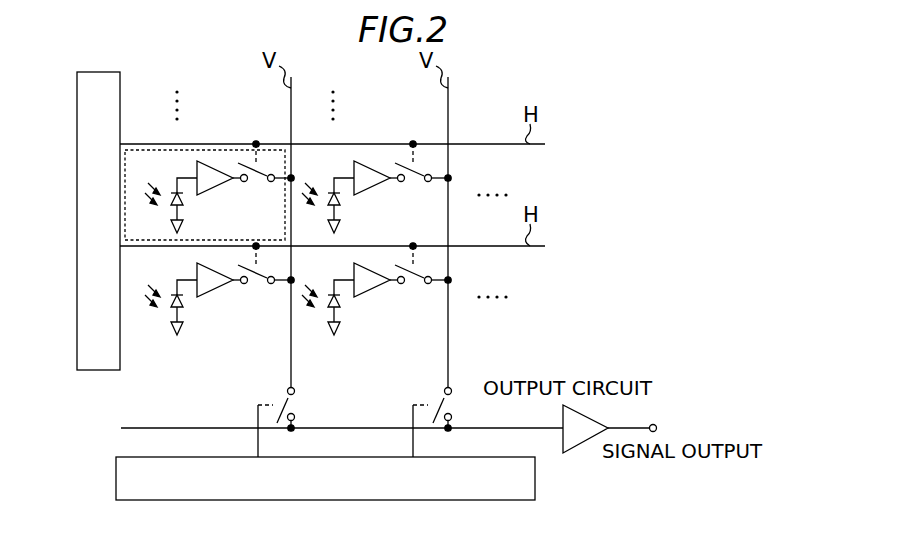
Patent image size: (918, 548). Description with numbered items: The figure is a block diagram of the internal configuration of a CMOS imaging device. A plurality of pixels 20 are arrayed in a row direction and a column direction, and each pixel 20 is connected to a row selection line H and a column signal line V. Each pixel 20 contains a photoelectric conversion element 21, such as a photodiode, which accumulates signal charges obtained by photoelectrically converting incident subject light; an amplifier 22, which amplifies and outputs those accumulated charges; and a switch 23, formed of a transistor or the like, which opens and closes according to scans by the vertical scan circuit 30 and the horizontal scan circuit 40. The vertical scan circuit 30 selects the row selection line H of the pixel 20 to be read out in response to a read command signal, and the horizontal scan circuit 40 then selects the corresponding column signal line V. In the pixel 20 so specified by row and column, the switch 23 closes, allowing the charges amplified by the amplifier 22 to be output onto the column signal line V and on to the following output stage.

The pixel 20 is at (209, 170).
The photoelectric conversion element 21 is at (174, 193).
The amplifier 22 is at (217, 187).
The switch 23 is at (262, 186).
The vertical scan circuit 30 is at (77, 140).
The horizontal scan circuit 40 is at (483, 500).